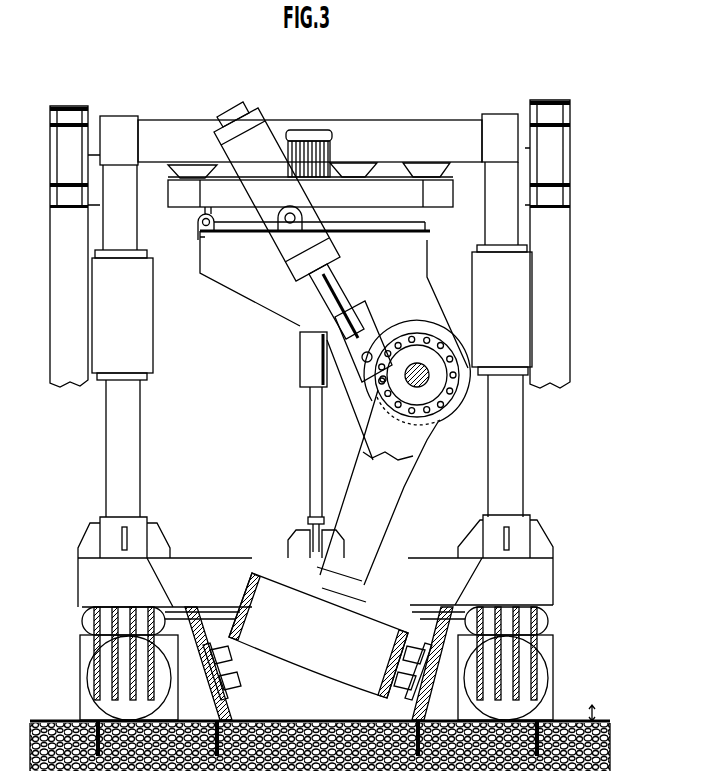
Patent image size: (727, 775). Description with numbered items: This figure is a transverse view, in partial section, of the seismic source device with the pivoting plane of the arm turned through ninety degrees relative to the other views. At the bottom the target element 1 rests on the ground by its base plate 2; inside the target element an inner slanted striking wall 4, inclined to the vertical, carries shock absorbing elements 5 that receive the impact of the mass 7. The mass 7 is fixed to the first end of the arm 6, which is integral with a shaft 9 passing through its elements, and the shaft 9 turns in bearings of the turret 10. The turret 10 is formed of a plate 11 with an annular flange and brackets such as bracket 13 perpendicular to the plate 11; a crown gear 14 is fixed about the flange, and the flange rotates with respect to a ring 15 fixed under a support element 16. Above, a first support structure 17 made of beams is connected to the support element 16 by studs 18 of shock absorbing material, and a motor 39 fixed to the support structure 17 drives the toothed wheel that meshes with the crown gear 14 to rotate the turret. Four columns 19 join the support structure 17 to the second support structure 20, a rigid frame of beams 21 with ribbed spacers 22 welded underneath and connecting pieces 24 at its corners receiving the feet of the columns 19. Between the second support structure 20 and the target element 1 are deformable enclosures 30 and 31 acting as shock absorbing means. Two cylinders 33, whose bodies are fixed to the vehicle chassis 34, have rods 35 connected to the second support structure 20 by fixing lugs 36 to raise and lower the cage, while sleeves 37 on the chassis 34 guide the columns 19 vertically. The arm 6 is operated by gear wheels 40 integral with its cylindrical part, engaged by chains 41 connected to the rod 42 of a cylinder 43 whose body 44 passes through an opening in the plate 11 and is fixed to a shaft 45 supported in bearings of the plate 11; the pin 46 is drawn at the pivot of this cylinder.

The target element 1 is at (537, 677).
The base plate 2 is at (297, 721).
The inner slanted striking wall 4 is at (193, 640).
The shock absorbing elements 5 is at (240, 686).
The arm 6 is at (400, 488).
The mass 7 is at (290, 592).
The shaft 9 is at (426, 383).
The turret 10 is at (286, 345).
The plate 11 is at (203, 237).
The bracket 13 is at (257, 302).
The crown gear 14 is at (203, 222).
The ring 15 is at (224, 233).
The support element 16 is at (437, 197).
The first support structure 17 is at (382, 128).
The studs 18 is at (431, 168).
The columns 19 is at (512, 417).
The second support structure 20 is at (315, 557).
The rigid beams 21 is at (445, 557).
The ribbed spacers 22 is at (88, 643).
The connecting pieces 24 is at (535, 532).
The deformable enclosures 30 is at (543, 620).
The deformable enclosures 31 is at (546, 684).
The cylinders 33 is at (295, 363).
The chassis 34 is at (563, 250).
The rods 35 is at (320, 427).
The fixing lugs 36 is at (302, 548).
The sleeves 37 is at (518, 294).
The motor 39 is at (308, 130).
The gear wheels 40 is at (425, 355).
The chains 41 is at (408, 410).
The rod 42 is at (338, 284).
The cylinder 43 is at (298, 208).
The body 44 is at (258, 150).
The shaft 45 is at (282, 224).
The pin bracket 46 is at (290, 229).